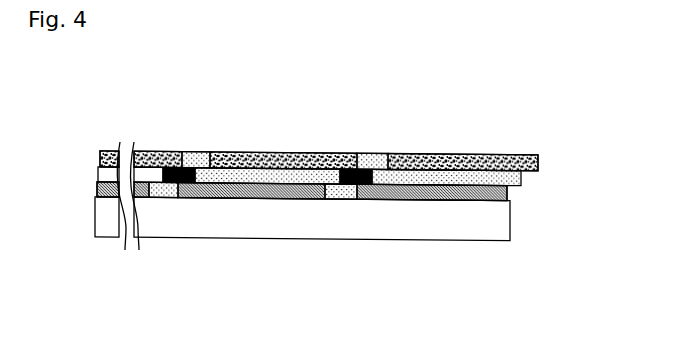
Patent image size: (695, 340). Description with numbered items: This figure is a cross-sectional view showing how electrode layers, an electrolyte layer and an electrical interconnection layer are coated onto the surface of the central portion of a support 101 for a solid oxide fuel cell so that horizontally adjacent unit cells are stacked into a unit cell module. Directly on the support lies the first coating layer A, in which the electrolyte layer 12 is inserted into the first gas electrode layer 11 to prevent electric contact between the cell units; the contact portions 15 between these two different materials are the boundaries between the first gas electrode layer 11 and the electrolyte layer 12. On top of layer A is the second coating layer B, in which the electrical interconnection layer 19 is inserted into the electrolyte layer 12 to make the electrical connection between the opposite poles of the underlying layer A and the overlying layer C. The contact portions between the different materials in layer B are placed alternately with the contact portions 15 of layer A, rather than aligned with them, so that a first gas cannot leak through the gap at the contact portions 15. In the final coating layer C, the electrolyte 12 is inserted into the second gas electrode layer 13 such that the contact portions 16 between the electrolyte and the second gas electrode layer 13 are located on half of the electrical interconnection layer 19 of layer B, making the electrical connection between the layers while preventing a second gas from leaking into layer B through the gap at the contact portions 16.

The substrate 101 is at (433, 230).
The first gas electrode layer 11 is at (243, 193).
The electrolyte layer 12 is at (344, 195).
The boundary between the first gas electrode layer and the electrolyte layer 15 is at (178, 198).
The second gas electrode layer 13 is at (309, 152).
The boundary between the second gas electrode layer and the electrolyte layer 16 is at (210, 151).
The electrical interconnection layer 19 is at (368, 152).
The first coating layer A is at (509, 192).
The second coating layer B is at (523, 178).
The final coating layer C is at (540, 163).